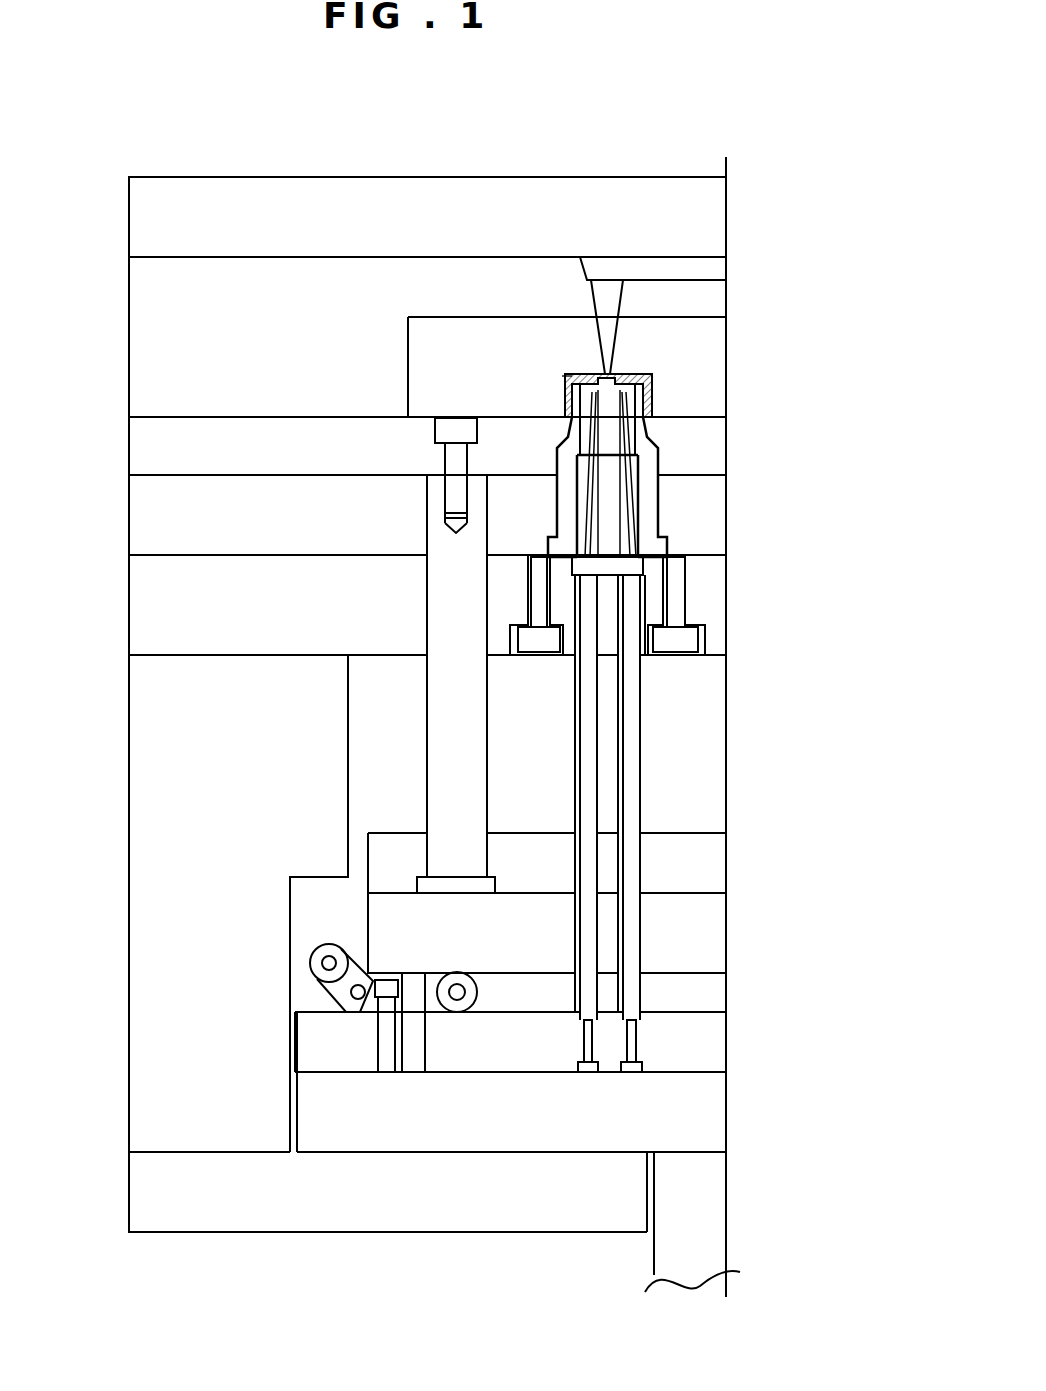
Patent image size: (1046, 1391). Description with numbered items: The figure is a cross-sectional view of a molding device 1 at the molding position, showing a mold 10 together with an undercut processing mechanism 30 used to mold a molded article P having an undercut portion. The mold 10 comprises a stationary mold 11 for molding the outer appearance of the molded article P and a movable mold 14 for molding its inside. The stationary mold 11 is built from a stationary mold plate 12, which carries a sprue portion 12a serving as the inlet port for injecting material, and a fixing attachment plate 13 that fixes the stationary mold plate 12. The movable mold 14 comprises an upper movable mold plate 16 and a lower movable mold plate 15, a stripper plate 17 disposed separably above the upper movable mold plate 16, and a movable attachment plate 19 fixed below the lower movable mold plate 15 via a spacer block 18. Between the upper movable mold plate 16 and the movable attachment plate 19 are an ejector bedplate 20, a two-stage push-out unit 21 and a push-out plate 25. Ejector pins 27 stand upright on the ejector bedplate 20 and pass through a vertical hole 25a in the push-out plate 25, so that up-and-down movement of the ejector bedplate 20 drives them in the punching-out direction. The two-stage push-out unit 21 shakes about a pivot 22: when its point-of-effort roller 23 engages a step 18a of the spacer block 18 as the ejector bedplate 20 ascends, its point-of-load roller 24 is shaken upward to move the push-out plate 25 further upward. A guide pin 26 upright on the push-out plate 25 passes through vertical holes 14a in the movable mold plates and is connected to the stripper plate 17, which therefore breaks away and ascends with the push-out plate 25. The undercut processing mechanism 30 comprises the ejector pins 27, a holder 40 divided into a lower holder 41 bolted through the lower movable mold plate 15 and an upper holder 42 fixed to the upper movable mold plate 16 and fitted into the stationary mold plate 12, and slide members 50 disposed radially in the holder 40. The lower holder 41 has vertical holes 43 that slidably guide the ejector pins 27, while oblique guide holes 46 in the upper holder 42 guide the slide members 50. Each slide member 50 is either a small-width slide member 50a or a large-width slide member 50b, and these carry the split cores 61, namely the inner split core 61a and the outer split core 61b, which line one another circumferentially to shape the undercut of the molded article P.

The molding device 1 is at (630, 170).
The mold 10 is at (124, 172).
The stationary mold 11 is at (129, 233).
The stationary mold plate 12 is at (129, 313).
The sprue portion 12a is at (620, 294).
The fixing attachment plate 13 is at (129, 250).
The movable mold 14 is at (129, 428).
The vertical holes 14a is at (432, 600).
The lower movable mold plate 15 is at (129, 592).
The upper movable mold plate 16 is at (129, 519).
The stripper plate 17 is at (129, 453).
The spacer block 18 is at (129, 673).
The step 18a is at (290, 880).
The movable attachment plate 19 is at (129, 1181).
The ejector bedplate 20 is at (726, 1041).
The two-stage push-out unit 21 is at (300, 940).
The pivot 22 is at (375, 985).
The point-of-effort roller 23 is at (310, 960).
The point-of-load roller 24 is at (457, 1012).
The push-out plate 25 is at (726, 866).
The vertical hole 25a is at (646, 947).
The guide pin 26 is at (487, 758).
The ejector pins 27 is at (643, 736).
The undercut processing mechanism 30 is at (548, 437).
The holder 40 is at (855, 530).
The lower holder 41 is at (650, 588).
The upper holder 42 is at (662, 532).
The vertical holes 43 is at (636, 644).
The guide holes 46 is at (596, 440).
The slide members 50 is at (858, 442).
The small-width slide member 50a is at (628, 512).
The large-width slide member 50b is at (605, 470).
The split cores 61 is at (835, 312).
The inner split core 61a is at (650, 376).
The outer split core 61b is at (584, 374).
The molded article P is at (562, 376).